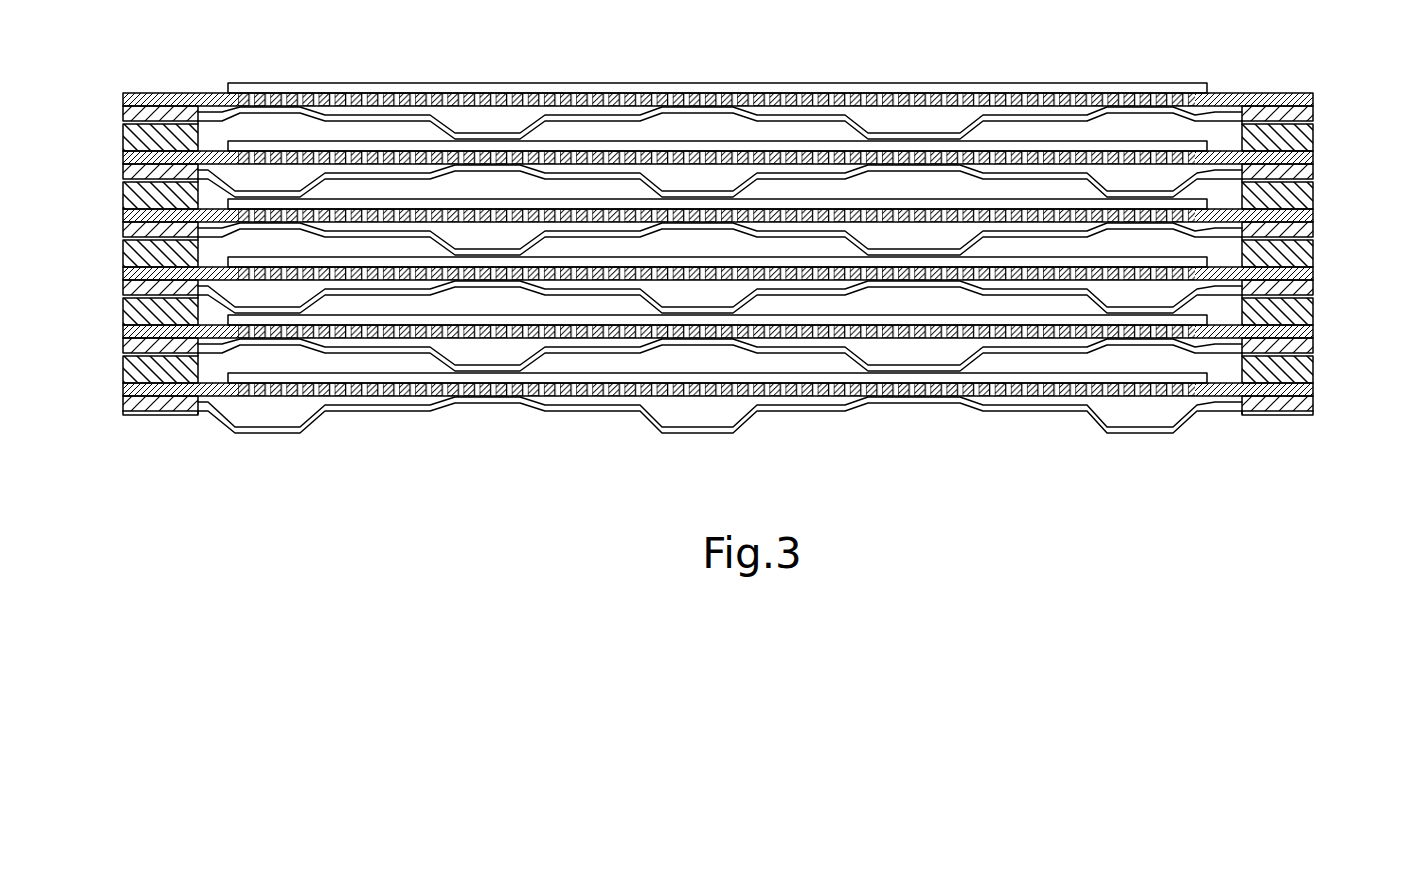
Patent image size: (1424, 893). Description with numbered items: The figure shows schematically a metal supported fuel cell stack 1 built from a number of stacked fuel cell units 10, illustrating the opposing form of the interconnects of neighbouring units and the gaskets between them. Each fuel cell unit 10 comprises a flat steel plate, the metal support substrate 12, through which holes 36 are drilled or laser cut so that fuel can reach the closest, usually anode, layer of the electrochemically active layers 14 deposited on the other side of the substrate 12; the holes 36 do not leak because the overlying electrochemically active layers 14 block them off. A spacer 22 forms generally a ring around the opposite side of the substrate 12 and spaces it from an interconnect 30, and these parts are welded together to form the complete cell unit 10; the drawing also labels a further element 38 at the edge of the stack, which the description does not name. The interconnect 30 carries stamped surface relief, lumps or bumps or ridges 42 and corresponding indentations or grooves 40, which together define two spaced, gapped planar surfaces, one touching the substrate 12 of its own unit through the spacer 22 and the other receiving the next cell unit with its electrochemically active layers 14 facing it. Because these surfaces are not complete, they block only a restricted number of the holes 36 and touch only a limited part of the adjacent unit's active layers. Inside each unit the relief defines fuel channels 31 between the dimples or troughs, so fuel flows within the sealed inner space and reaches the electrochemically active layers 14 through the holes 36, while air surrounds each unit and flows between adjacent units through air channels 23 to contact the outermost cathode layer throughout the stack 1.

The metal supported fuel cell stack 1 is at (1374, 187).
The fuel cell unit 10 is at (1317, 385).
The metal support substrate 12 is at (1033, 97).
The electrochemically active layers 14 is at (803, 86).
The spacer 22 is at (130, 110).
The air channels 23 is at (268, 121).
The interconnect 30 is at (575, 117).
The fuel channels 31 is at (465, 119).
The holes 36 is at (712, 391).
The frame member 38 is at (1278, 377).
The indentations or grooves 40 is at (700, 114).
The lumps, bumps or ridges 42 is at (488, 133).